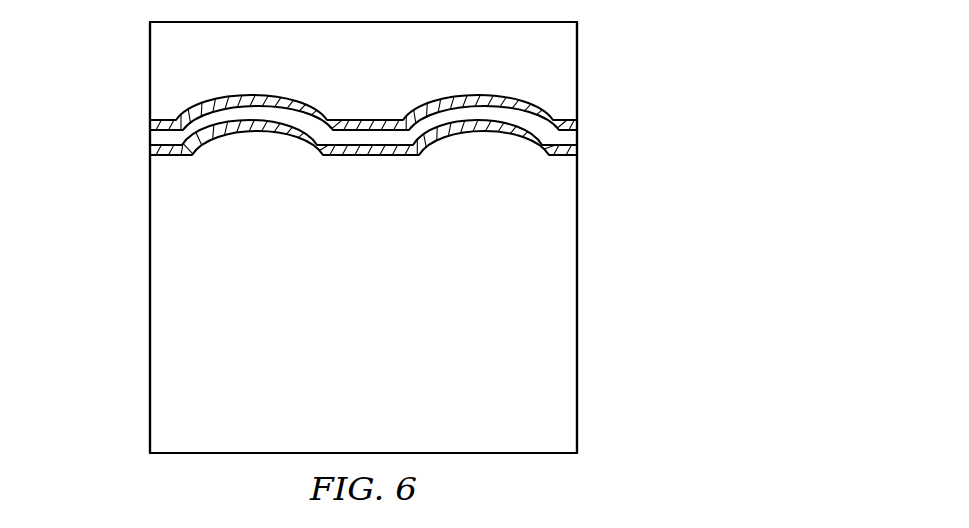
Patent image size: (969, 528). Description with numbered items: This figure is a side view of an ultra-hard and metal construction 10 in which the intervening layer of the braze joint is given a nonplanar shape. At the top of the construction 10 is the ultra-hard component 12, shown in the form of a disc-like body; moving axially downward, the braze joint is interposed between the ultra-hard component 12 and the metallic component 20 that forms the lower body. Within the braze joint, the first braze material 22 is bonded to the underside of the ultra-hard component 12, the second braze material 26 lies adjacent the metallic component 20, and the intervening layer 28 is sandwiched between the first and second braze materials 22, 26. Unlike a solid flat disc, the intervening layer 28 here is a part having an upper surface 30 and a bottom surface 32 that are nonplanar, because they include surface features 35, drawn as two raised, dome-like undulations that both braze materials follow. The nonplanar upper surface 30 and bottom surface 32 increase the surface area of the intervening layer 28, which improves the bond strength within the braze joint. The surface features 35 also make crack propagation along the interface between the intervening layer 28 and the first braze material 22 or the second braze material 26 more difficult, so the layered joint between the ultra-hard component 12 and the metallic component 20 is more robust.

The ultra-hard and metal construction 10 is at (93, 60).
The ultra-hard component 12 is at (578, 62).
The metallic component 20 is at (578, 283).
The first braze material 22 is at (578, 125).
The second braze material 26 is at (578, 150).
The intervening layer 28 is at (578, 138).
The upper surface 30 is at (152, 139).
The bottom surface 32 is at (178, 143).
The surface features 35 is at (236, 102).